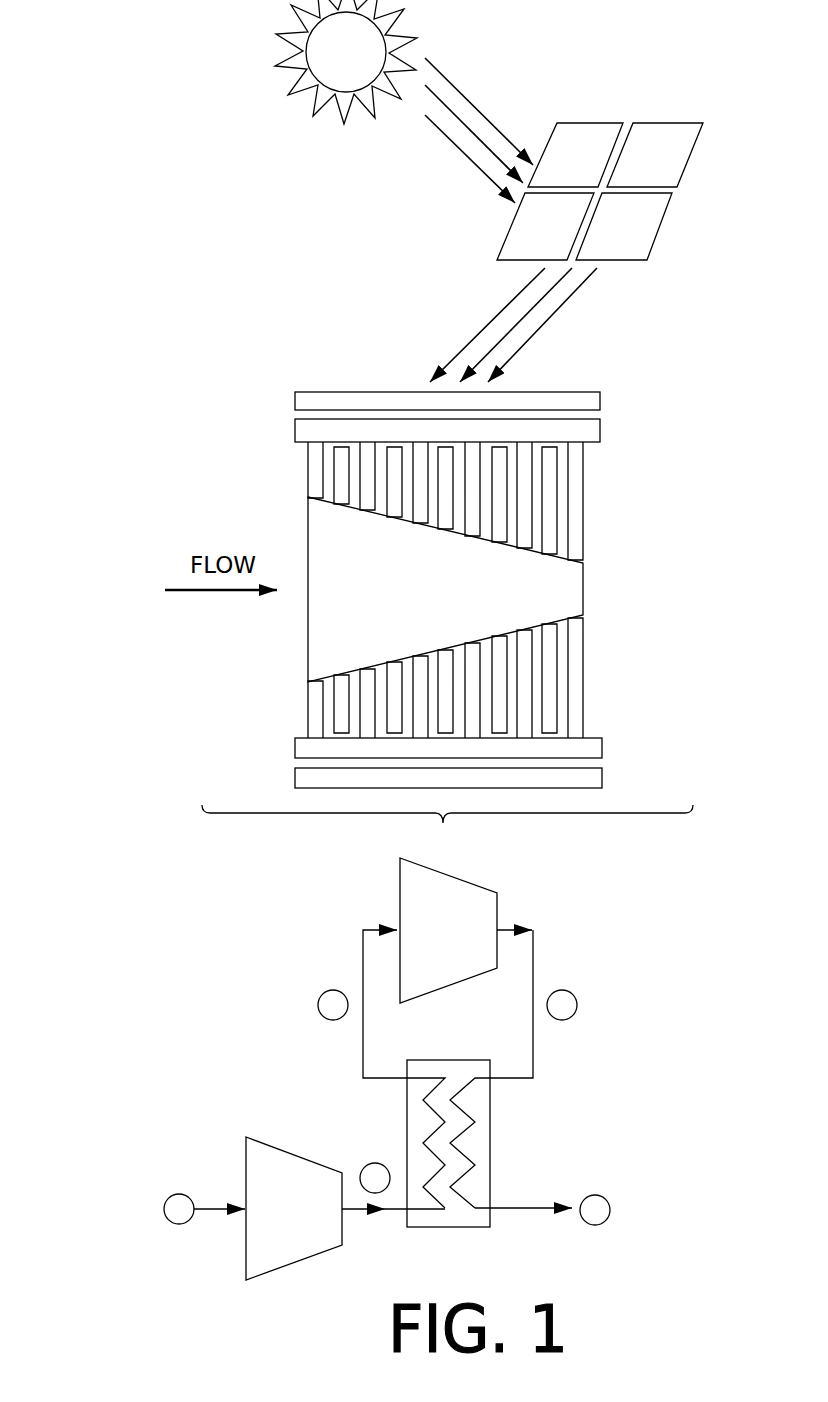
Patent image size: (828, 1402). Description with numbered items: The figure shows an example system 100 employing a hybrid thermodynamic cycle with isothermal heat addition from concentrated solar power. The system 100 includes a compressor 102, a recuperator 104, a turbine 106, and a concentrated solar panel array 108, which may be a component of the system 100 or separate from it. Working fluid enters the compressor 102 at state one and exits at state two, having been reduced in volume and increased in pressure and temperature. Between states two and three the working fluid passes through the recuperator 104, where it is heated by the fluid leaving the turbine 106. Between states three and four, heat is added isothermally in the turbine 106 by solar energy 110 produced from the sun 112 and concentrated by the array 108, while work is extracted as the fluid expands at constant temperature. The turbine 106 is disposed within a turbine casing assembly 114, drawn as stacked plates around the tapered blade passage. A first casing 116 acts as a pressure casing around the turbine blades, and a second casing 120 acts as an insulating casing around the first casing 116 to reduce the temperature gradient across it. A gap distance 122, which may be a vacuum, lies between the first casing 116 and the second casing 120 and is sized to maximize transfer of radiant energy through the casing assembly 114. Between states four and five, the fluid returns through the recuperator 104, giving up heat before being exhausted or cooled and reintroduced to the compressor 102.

The system 100 is at (155, 1052).
The compressor 102 is at (275, 1219).
The recuperator 104 is at (490, 1140).
The turbine 106 is at (427, 602).
The concentrated solar panel (CSP) array 108 is at (632, 108).
The solar energy 110 is at (453, 302).
The sun 112 is at (262, 48).
The turbine casing assembly 114 is at (460, 406).
The first casing 116 is at (600, 432).
The second casing 120 is at (600, 403).
The gap distance 122 is at (293, 765).